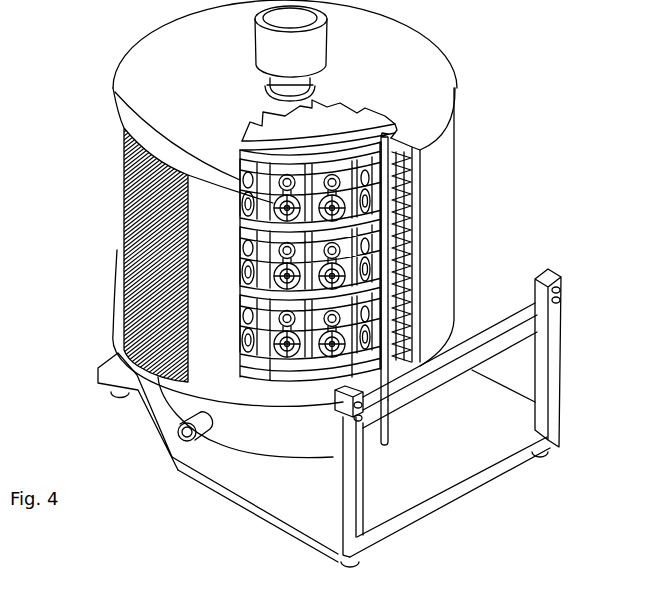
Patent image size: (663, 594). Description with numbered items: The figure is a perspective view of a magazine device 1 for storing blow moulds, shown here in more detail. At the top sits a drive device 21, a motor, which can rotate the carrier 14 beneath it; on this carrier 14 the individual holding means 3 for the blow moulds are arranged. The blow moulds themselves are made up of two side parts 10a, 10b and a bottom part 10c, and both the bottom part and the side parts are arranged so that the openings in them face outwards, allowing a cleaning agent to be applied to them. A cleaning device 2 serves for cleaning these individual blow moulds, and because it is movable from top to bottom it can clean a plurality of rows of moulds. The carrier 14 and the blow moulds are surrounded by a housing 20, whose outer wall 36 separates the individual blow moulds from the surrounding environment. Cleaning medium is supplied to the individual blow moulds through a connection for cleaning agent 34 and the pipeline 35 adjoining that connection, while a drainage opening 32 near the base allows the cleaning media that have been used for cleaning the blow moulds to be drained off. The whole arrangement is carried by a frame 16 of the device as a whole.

The magazine device 1 is at (476, 176).
The cleaning device 2 is at (402, 248).
The holding means 3 is at (360, 217).
The side part of blow mould 10a is at (240, 180).
The side part of blow mould 10b is at (240, 175).
The bottom part of blow mould 10c is at (262, 249).
The carrier 14 is at (337, 122).
The frame 16 is at (470, 440).
The housing 20 is at (432, 162).
The drive device 21 is at (295, 67).
The drainage opening 32 is at (195, 440).
The connection for cleaning agent 34 is at (384, 448).
The pipeline 35 is at (384, 311).
The outer wall 36 is at (123, 227).